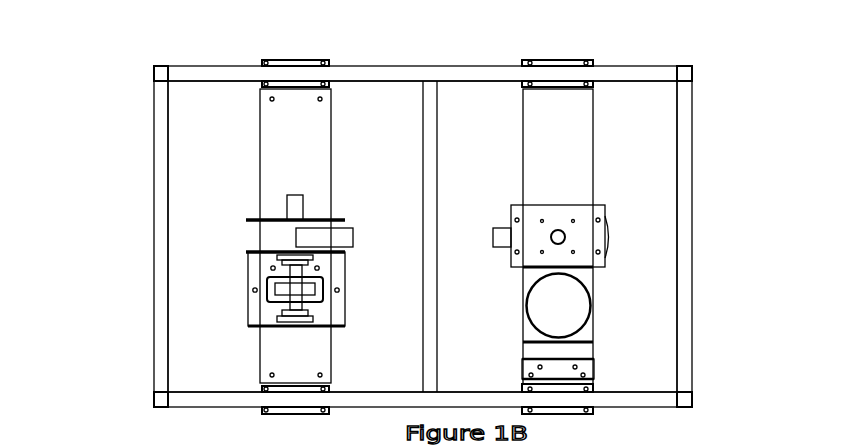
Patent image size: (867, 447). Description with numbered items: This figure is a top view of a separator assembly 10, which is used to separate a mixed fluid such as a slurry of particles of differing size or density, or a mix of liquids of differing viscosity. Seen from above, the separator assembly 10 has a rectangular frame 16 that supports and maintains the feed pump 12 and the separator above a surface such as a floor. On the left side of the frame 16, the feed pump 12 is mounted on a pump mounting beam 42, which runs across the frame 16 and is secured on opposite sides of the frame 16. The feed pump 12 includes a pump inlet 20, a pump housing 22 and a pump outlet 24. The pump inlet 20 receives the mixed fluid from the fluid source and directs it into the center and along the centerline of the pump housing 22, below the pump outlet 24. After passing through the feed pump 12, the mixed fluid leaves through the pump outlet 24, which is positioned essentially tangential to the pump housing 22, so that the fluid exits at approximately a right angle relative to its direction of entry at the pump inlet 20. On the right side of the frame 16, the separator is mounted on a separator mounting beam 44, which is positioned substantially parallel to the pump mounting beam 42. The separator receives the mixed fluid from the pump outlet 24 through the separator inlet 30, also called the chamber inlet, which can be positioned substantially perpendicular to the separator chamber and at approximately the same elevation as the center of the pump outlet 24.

The separator assembly 10 is at (418, 241).
The feed pump 12 is at (232, 212).
The frame 16 is at (698, 65).
The pump inlet 20 is at (296, 189).
The pump housing 22 is at (256, 237).
The pump outlet 24 is at (355, 236).
The separator inlet 30 is at (488, 230).
The pump mounting beam 42 is at (334, 137).
The separator mounting beam 44 is at (528, 117).